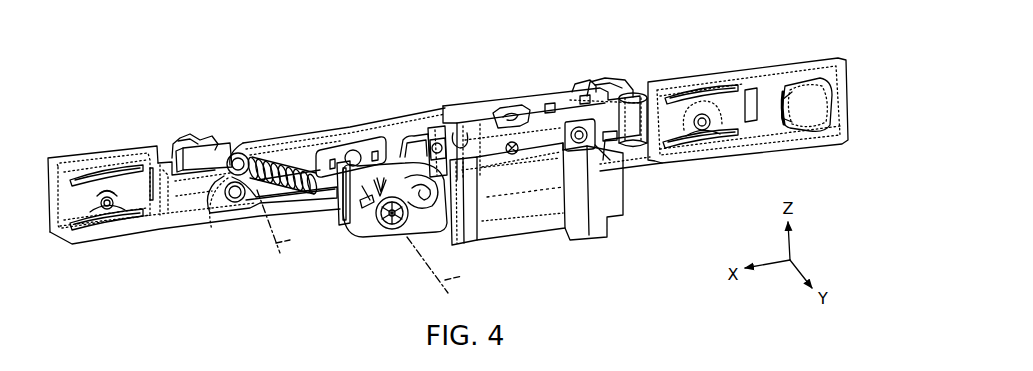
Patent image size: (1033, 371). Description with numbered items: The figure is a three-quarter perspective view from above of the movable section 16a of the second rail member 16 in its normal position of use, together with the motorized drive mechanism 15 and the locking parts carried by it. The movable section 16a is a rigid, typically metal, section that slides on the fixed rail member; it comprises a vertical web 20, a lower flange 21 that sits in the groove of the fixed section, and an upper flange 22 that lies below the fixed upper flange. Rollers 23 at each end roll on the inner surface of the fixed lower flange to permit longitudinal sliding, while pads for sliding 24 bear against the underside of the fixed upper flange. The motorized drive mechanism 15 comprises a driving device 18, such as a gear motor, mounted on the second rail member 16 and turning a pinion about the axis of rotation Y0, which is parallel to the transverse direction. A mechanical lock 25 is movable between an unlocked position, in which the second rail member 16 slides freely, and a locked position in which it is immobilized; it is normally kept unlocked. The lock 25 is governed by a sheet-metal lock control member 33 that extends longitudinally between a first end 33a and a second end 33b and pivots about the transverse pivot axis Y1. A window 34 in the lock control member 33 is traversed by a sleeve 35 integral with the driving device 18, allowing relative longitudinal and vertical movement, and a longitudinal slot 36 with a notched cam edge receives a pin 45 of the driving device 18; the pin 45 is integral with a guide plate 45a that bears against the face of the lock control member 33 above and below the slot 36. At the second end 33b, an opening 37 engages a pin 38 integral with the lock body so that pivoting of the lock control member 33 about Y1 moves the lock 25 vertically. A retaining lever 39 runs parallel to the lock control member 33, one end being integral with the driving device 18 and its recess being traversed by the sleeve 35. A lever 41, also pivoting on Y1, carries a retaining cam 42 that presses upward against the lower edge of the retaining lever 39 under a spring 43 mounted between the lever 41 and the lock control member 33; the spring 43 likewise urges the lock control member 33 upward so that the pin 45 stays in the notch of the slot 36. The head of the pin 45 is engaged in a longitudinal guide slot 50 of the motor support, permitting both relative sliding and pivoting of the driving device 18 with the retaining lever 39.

The motorized drive mechanism 15 is at (388, 248).
The second rail member 16 is at (797, 48).
The movable section 16a is at (178, 203).
The driving device 18 is at (515, 213).
The vertical web 20 is at (163, 197).
The lower flange 21 is at (113, 227).
The upper flange 22 is at (100, 157).
The rollers 23 is at (97, 223).
The pads for sliding 24 is at (195, 130).
The mechanical lock 25 is at (577, 91).
The lock control member 33 is at (296, 147).
The first end 33a is at (233, 203).
The second end 33b is at (567, 110).
The window 34 is at (363, 142).
The sleeve 35 is at (345, 180).
The slot 36 is at (456, 133).
The opening 37 is at (596, 138).
The pin 38 is at (603, 146).
The retaining lever 39 is at (205, 162).
The lever 41 is at (233, 152).
The retaining cam 42 is at (210, 192).
The spring 43 is at (270, 168).
The pin 45 is at (434, 140).
The guide plate 45a is at (438, 124).
The guide slot 50 is at (462, 140).
The axis of rotation Y0 is at (446, 265).
The pivot axis Y1 is at (286, 221).